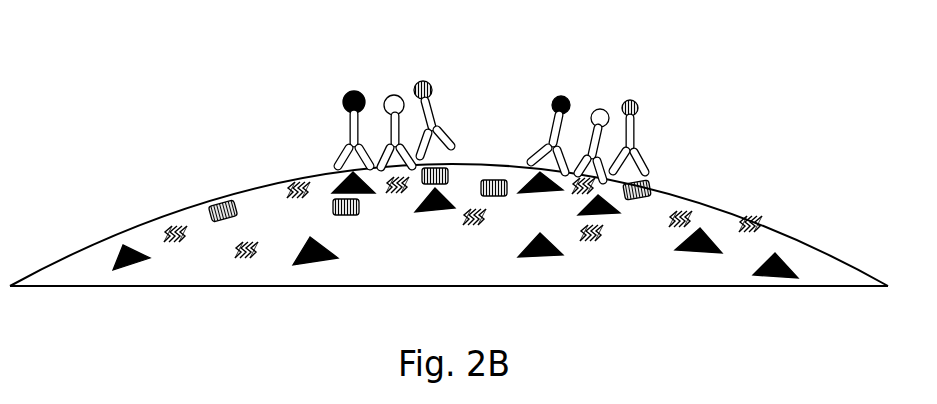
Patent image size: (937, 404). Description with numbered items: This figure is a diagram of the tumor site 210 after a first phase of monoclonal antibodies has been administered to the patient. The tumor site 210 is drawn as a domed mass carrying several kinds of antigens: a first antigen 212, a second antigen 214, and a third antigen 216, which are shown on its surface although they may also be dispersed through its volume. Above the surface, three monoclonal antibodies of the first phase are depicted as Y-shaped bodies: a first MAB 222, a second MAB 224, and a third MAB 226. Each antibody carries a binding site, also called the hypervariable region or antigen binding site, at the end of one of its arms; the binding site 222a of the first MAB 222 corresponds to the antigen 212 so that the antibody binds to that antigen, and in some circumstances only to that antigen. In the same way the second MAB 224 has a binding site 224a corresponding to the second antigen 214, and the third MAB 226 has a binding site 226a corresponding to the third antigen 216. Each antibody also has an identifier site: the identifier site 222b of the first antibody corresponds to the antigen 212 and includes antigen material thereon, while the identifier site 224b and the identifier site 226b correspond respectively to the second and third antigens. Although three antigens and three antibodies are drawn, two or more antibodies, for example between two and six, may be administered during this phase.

The tumor site 210 is at (115, 157).
The antigen 212 is at (124, 240).
The antigen 214 is at (182, 221).
The antigen 216 is at (235, 190).
The first MAB 222 is at (324, 101).
The binding site 222a is at (335, 155).
The second MAB 224 is at (359, 171).
The binding site 224a is at (383, 168).
The third MAB 226 is at (452, 85).
The binding site 226a is at (450, 137).
The identifier site 222b is at (561, 93).
The identifier site 224b is at (600, 106).
The identifier site 226b is at (631, 96).